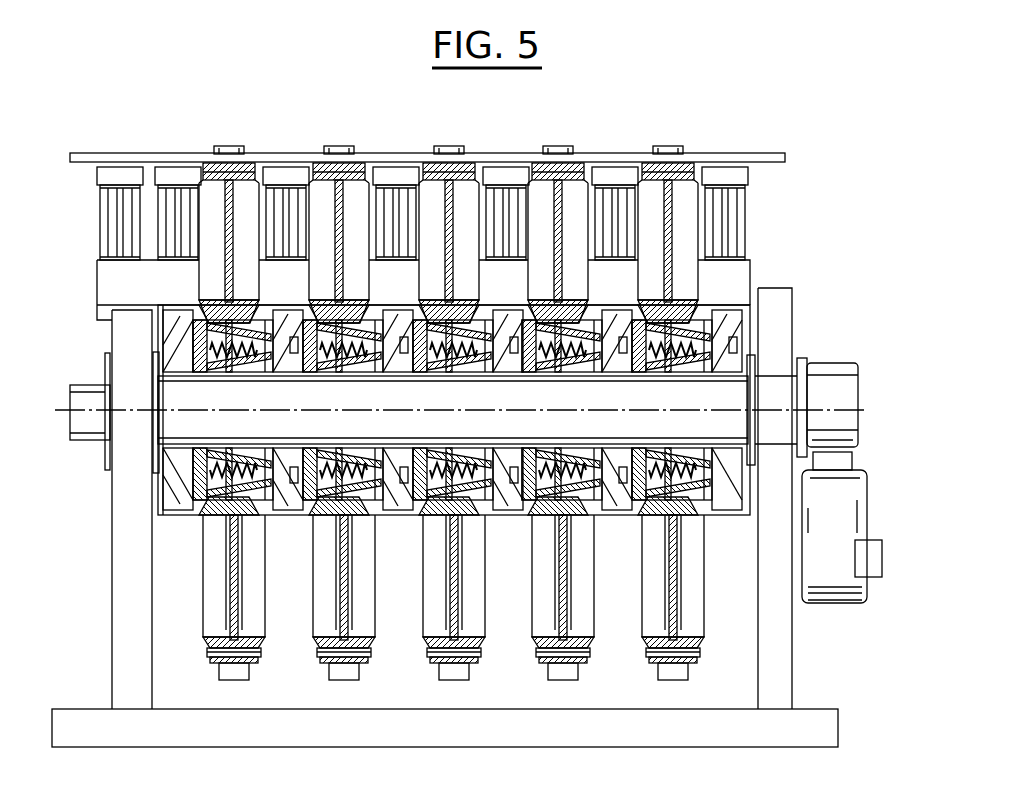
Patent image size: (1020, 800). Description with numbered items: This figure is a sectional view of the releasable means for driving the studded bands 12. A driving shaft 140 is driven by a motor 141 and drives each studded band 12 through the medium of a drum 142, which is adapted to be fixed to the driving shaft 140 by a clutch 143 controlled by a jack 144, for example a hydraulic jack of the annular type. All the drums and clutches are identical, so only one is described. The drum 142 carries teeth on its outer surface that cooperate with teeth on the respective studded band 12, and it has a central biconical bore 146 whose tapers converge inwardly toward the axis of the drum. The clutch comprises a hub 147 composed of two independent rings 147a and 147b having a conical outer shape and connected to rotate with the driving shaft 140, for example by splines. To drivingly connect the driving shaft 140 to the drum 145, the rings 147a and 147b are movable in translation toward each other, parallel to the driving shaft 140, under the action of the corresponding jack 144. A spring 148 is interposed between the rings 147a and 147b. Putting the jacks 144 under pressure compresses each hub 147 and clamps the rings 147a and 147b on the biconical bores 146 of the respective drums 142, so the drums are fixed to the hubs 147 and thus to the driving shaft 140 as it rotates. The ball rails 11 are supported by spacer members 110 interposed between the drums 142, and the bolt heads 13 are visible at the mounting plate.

The ball rail 11 is at (125, 168).
The studded band 12 is at (208, 163).
The bolt head 13 is at (242, 150).
The spacer member 110 is at (396, 180).
The drum 145 is at (578, 163).
The drum 142 is at (672, 205).
The clutch 143 is at (713, 305).
The jack 144 is at (747, 320).
The driving shaft 140 is at (724, 392).
The hub 147 is at (332, 371).
The ring 147a is at (402, 368).
The ring 147b is at (487, 373).
The biconical bore 146 is at (566, 318).
The spring 148 is at (690, 355).
The motor 141 is at (839, 574).